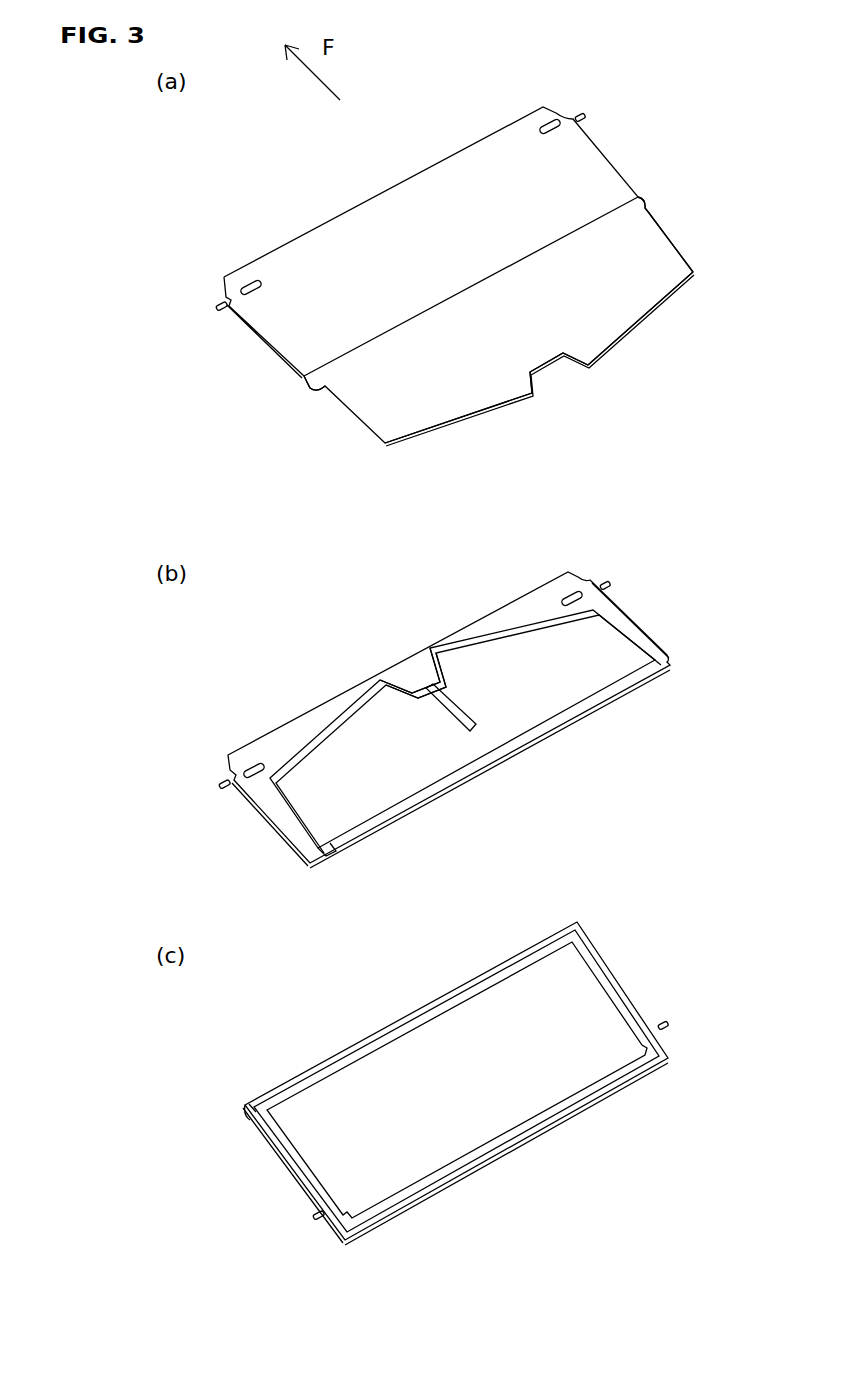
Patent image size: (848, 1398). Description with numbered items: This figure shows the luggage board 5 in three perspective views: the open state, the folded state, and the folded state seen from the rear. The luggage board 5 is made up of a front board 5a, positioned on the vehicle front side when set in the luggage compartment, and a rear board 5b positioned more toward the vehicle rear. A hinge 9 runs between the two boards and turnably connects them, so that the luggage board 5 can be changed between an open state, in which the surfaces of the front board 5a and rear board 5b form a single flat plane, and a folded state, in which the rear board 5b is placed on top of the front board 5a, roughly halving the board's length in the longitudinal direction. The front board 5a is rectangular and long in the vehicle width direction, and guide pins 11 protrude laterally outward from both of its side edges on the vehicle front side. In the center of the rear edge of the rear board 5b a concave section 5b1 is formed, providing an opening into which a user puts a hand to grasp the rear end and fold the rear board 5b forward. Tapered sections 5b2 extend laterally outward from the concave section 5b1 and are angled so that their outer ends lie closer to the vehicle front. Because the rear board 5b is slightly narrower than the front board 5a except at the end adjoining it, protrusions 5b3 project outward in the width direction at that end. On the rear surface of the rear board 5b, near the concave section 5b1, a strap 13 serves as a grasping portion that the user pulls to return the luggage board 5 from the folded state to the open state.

The luggage board 5 is at (465, 134).
The front board 5a is at (315, 250).
The rear board 5b is at (380, 405).
The concave section 5b1 is at (563, 365).
The tapered sections 5b2 is at (650, 325).
The protrusions 5b3 is at (310, 385).
The hinge 9 is at (357, 345).
The guide pins 11 is at (221, 303).
The strap 13 is at (478, 726).